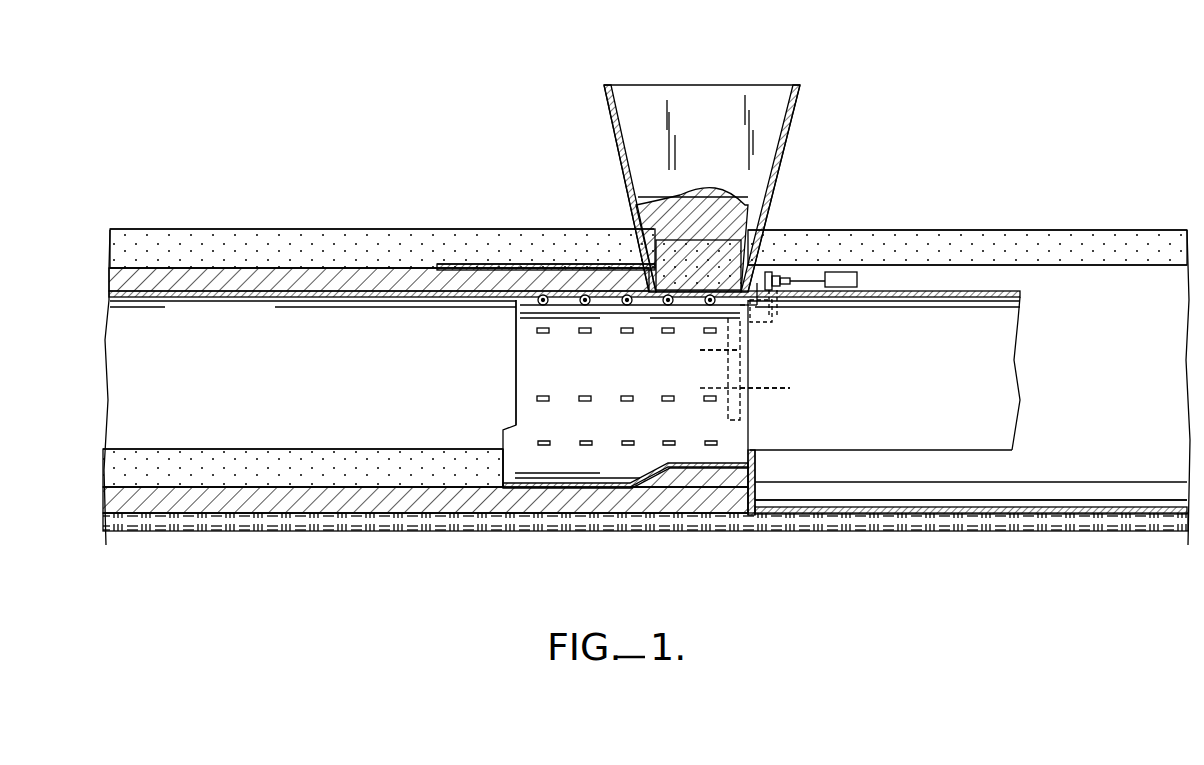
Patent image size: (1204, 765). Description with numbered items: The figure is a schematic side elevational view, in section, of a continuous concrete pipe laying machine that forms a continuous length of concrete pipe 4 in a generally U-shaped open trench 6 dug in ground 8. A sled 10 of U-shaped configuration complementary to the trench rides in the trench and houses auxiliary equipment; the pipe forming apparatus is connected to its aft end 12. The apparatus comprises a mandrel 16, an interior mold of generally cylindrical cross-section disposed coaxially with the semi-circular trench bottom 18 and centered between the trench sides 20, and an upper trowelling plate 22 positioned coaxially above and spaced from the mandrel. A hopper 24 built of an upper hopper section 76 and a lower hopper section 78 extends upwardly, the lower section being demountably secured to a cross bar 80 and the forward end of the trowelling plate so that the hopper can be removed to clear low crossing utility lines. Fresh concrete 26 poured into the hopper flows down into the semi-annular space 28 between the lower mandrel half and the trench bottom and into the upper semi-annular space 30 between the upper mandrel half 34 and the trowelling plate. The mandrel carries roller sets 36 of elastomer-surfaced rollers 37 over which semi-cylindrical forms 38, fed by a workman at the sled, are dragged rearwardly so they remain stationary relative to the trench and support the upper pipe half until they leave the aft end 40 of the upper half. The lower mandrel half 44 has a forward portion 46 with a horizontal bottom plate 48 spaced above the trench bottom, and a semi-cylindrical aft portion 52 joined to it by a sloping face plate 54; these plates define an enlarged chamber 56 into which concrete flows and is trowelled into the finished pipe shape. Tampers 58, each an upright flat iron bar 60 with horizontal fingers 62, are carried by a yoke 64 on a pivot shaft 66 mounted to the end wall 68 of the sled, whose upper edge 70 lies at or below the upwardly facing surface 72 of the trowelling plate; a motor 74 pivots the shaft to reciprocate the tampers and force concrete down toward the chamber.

The concrete pipe 4 is at (122, 275).
The trench 6 is at (358, 242).
The ground 8 is at (848, 518).
The sled 10 is at (1032, 262).
The aft end 12 is at (775, 500).
The mandrel 16 is at (514, 422).
The trench bottom 18 is at (325, 515).
The trench sides 20 is at (172, 256).
The upper trowelling plate 22 is at (455, 264).
The hopper 24 is at (650, 96).
The fresh concrete 26 is at (712, 190).
The semi-annular space 28 is at (590, 505).
The upper semi-annular space 30 is at (248, 272).
The upper mandrel half 34 is at (518, 318).
The roller sets 36 is at (710, 442).
The rollers 37 is at (585, 336).
The forms 38 is at (196, 297).
The aft end 40 is at (516, 352).
The lower mandrel half 44 is at (558, 470).
The forward portion 46 is at (680, 488).
The bottom plate 48 is at (752, 470).
The aft portion 52 is at (512, 490).
The sloping face plate 54 is at (655, 480).
The chamber 56 is at (722, 500).
The tampers 58 is at (748, 388).
The flat iron bar 60 is at (740, 350).
The fingers 62 is at (705, 352).
The yoke 64 is at (770, 272).
The pivot shaft 66 is at (792, 290).
The end wall 68 is at (790, 280).
The upper edge 70 is at (780, 276).
The upwardly facing surface 72 is at (548, 262).
The motor 74 is at (858, 285).
The upper hopper section 76 is at (796, 115).
The lower hopper section 78 is at (610, 124).
The cross bar 80 is at (698, 265).